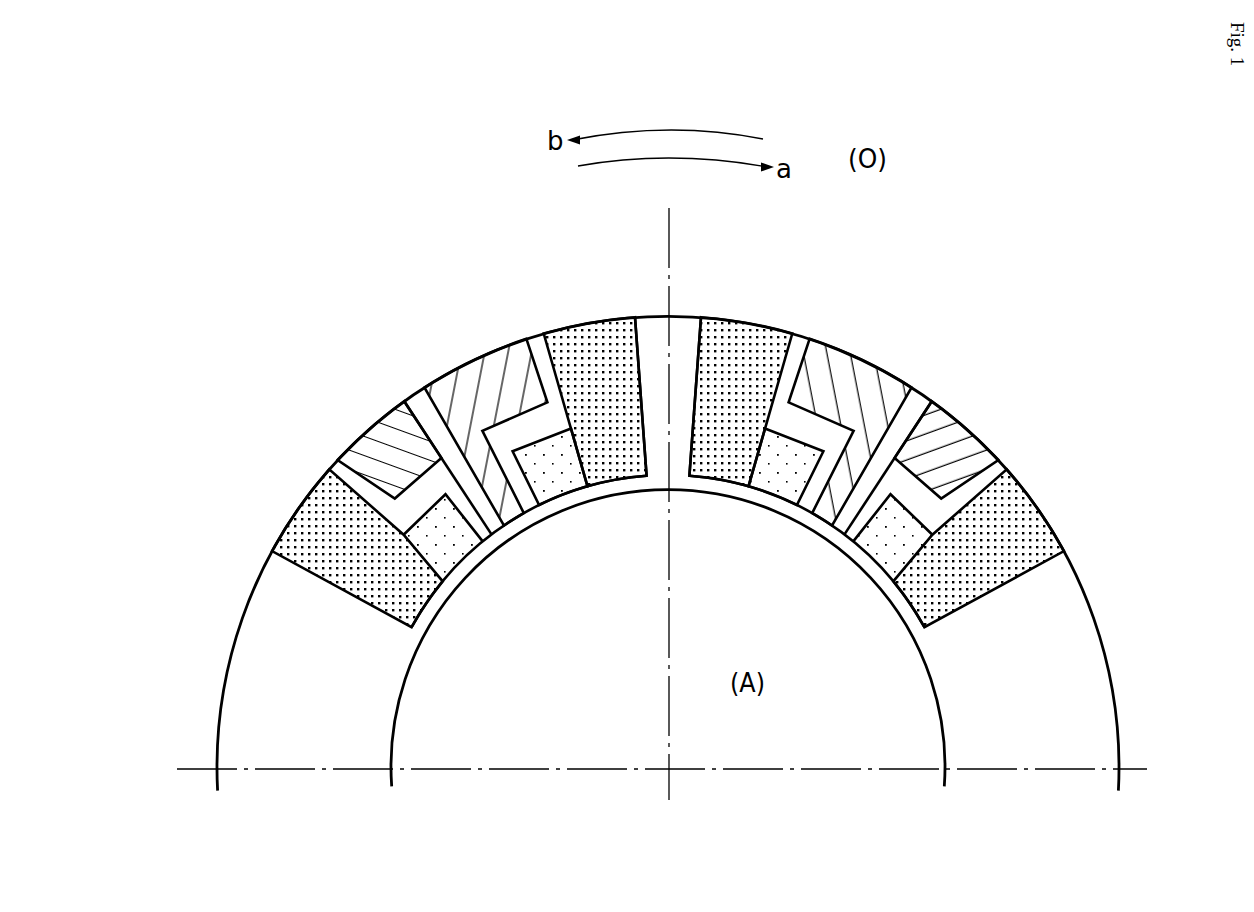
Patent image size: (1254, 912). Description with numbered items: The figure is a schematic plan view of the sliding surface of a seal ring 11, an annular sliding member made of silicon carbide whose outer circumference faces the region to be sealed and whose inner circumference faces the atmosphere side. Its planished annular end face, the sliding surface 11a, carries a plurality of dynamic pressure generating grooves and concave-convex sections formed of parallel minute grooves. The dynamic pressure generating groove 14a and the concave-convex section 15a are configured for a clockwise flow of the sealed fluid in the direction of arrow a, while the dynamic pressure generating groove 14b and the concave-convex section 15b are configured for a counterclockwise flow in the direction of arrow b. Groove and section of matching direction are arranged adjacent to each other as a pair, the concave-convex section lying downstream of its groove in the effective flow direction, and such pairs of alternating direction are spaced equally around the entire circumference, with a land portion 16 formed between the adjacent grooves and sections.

The seal ring 11 is at (1006, 359).
The sliding surface 11a is at (652, 326).
The dynamic pressure generating groove 14a is at (754, 316).
The dynamic pressure generating groove 14b is at (590, 316).
The concave-convex section 15a is at (865, 346).
The concave-convex section 15b is at (474, 346).
The land portion 16 is at (523, 431).